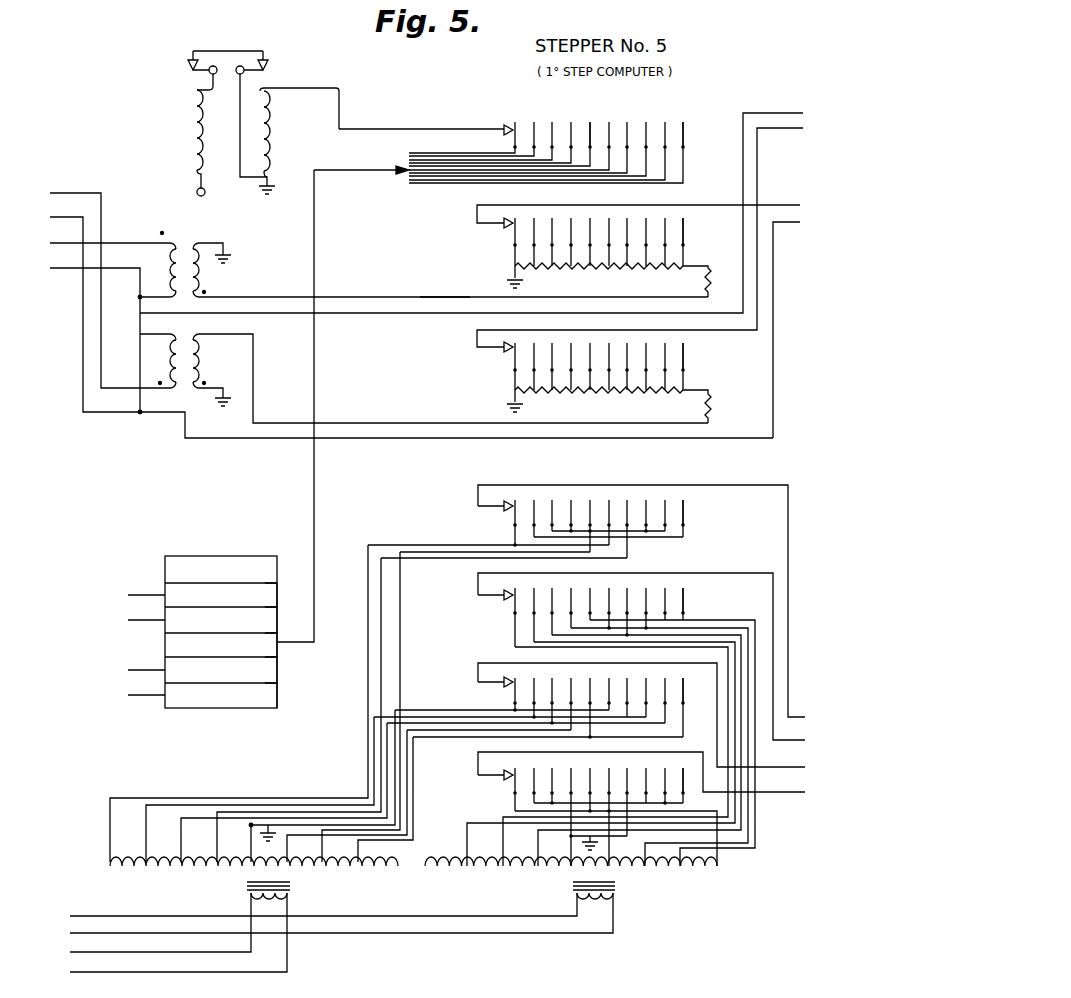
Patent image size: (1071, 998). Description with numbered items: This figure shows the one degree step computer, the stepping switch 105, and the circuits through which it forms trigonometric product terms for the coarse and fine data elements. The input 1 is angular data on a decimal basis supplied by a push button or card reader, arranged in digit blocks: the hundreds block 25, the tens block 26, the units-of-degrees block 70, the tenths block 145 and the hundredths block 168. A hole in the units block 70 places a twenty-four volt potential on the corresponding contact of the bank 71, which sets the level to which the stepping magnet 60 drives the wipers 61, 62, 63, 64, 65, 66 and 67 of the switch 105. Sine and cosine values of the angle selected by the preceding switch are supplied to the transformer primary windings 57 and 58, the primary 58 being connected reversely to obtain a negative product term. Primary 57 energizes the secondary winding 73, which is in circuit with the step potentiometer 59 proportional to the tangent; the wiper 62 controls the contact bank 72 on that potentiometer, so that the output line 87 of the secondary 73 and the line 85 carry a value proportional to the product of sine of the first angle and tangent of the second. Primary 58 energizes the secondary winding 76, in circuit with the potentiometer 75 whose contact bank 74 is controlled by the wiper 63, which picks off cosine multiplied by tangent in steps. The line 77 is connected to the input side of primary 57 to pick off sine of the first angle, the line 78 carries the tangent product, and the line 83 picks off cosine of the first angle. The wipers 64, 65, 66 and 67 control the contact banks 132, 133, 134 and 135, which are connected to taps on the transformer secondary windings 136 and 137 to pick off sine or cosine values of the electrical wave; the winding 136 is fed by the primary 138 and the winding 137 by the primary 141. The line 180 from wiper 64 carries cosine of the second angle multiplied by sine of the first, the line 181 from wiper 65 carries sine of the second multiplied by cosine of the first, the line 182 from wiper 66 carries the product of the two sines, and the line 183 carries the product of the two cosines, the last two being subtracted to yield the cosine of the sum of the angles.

The input 1 is at (165, 566).
The 100 degree input block 25 is at (277, 705).
The 10 degree input block 26 is at (277, 680).
The transformer primary winding 57 is at (168, 258).
The transformer primary winding 58 is at (168, 360).
The step potentiometer 59 is at (576, 268).
The stepping magnet 60 is at (197, 115).
The wiper 61 is at (504, 131).
The wiper 62 is at (505, 225).
The wiper 63 is at (505, 349).
The wiper 64 is at (504, 507).
The wiper 65 is at (504, 596).
The wiper 66 is at (504, 683).
The wiper 67 is at (504, 776).
The input block 70 is at (277, 655).
The contact bank 71 is at (685, 137).
The contact bank 72 is at (685, 236).
The secondary winding 73 is at (206, 278).
The contact bank 74 is at (685, 359).
The potentiometer 75 is at (571, 392).
The secondary winding 76 is at (205, 362).
The line 77 is at (280, 314).
The line 78 is at (775, 129).
The line 83 is at (786, 223).
The line 85 is at (794, 205).
The output line 87 is at (427, 297).
The switch 105 is at (597, 116).
The contact bank 132 is at (685, 516).
The contact bank 133 is at (685, 596).
The contact bank 134 is at (685, 690).
The contact bank 135 is at (685, 780).
The transformer secondary winding 136 is at (176, 880).
The transformer secondary winding 137 is at (520, 880).
The primary winding 138 is at (289, 898).
The primary winding 141 is at (615, 899).
The input block 145 is at (277, 621).
The 0.01 degree input block 168 is at (277, 595).
The line 180 is at (743, 486).
The line 181 is at (748, 568).
The line 182 is at (800, 766).
The line 183 is at (783, 793).